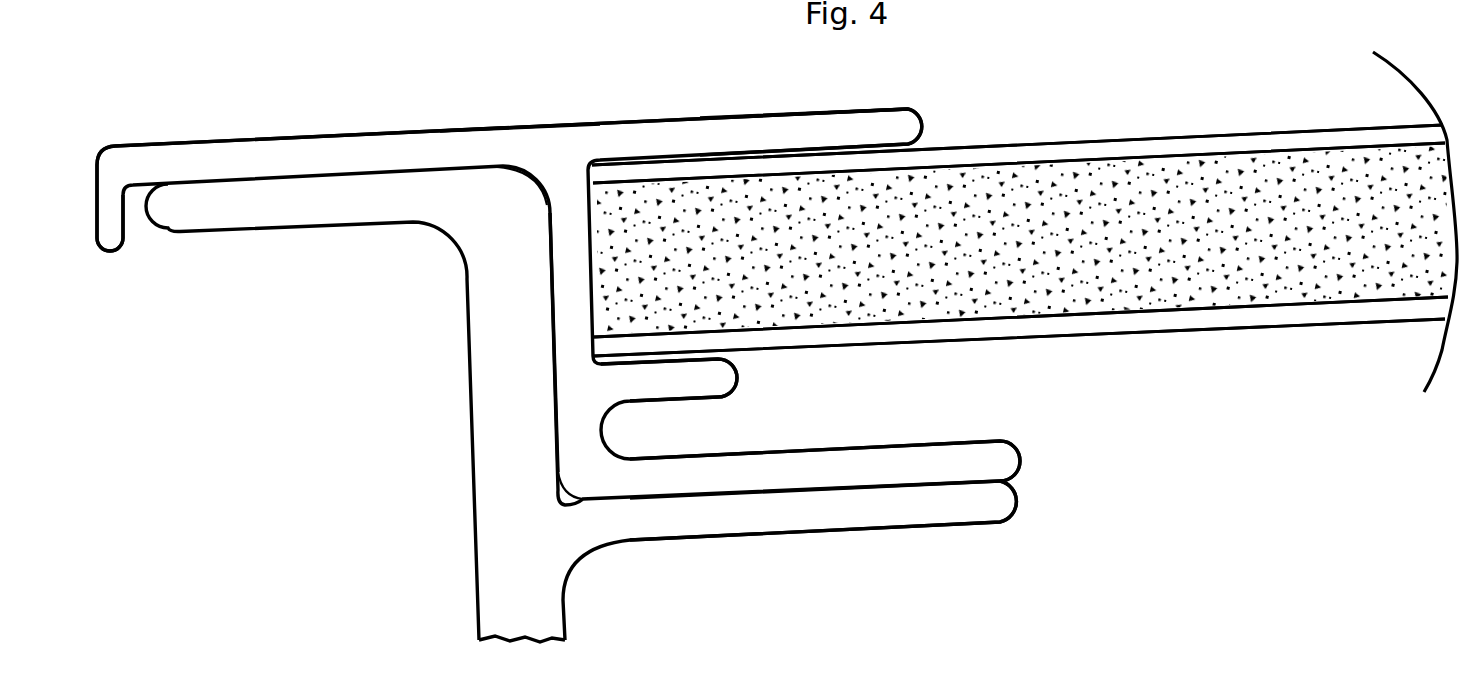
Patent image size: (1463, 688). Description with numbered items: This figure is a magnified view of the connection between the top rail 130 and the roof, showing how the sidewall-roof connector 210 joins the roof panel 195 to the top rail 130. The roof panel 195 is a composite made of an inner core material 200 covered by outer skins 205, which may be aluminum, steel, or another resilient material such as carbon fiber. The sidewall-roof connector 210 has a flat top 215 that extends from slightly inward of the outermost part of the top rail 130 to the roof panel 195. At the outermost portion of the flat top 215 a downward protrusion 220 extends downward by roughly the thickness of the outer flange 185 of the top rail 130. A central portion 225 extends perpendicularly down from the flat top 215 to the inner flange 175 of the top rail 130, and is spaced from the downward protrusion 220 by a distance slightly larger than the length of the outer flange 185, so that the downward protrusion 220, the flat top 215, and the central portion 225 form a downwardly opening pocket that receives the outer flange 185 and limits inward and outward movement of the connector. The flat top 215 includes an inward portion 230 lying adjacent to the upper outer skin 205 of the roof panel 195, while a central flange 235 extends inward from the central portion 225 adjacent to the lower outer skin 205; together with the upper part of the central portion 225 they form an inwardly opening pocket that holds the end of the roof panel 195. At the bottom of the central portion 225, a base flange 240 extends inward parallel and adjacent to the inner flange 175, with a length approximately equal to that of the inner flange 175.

The top rail 130 is at (455, 476).
The inner flange 175 is at (820, 515).
The outer flange 185 is at (315, 208).
The roof panel 195 is at (1225, 114).
The inner core material 200 is at (1122, 258).
The outer skins 205 is at (1013, 155).
The sidewall-roof connector 210 is at (178, 122).
The flat top 215 is at (481, 147).
The downward protrusion 220 is at (123, 250).
The central portion 225 is at (573, 303).
The inward portion 230 is at (810, 137).
The central flange 235 is at (712, 384).
The base flange 240 is at (938, 462).